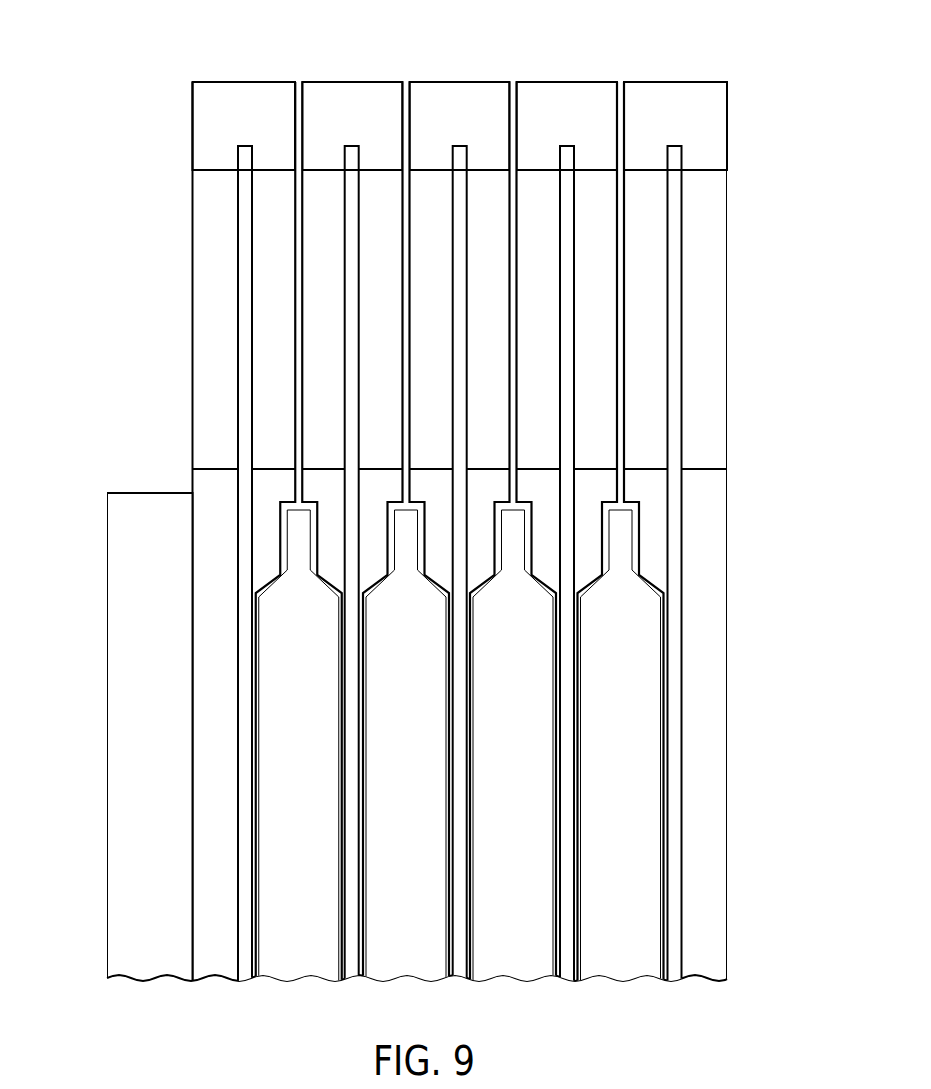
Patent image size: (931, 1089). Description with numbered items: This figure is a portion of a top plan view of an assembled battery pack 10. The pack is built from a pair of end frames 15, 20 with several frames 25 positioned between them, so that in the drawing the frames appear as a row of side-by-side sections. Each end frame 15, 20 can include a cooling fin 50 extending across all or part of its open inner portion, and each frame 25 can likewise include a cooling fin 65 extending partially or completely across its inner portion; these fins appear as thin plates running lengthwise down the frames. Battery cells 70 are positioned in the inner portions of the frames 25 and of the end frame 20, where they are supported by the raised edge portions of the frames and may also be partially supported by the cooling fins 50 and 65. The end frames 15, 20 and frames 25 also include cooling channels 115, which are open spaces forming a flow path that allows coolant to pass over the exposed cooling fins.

The battery pack 10 is at (398, 499).
The end frame 15 is at (247, 84).
The end frame 20 is at (679, 84).
The frame 25 is at (355, 84).
The cooling fin 50 is at (240, 197).
The cooling fin 65 is at (354, 241).
The battery cell 70 is at (300, 970).
The cooling channel 115 is at (200, 257).